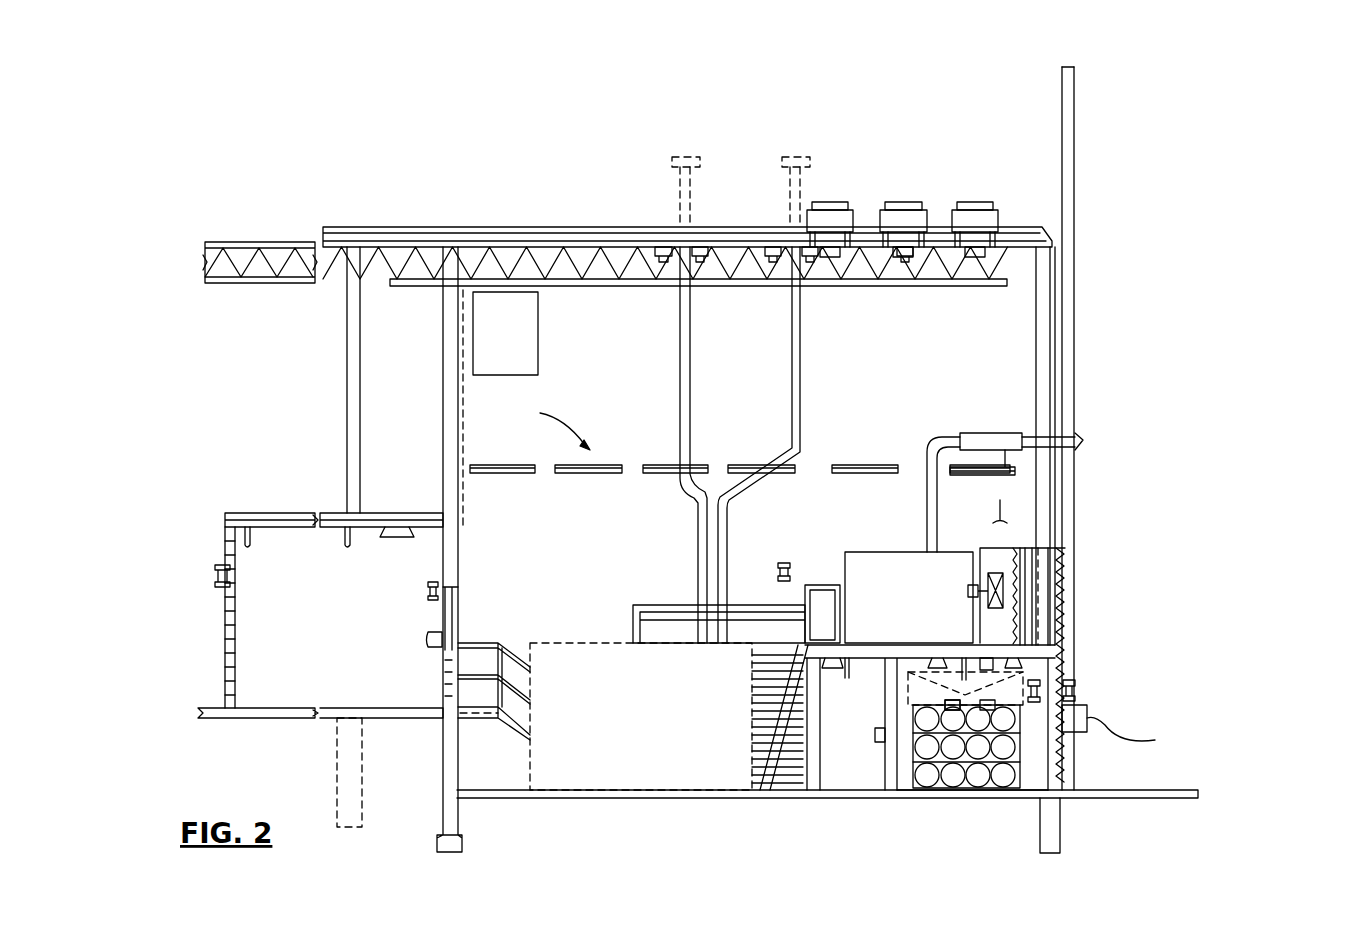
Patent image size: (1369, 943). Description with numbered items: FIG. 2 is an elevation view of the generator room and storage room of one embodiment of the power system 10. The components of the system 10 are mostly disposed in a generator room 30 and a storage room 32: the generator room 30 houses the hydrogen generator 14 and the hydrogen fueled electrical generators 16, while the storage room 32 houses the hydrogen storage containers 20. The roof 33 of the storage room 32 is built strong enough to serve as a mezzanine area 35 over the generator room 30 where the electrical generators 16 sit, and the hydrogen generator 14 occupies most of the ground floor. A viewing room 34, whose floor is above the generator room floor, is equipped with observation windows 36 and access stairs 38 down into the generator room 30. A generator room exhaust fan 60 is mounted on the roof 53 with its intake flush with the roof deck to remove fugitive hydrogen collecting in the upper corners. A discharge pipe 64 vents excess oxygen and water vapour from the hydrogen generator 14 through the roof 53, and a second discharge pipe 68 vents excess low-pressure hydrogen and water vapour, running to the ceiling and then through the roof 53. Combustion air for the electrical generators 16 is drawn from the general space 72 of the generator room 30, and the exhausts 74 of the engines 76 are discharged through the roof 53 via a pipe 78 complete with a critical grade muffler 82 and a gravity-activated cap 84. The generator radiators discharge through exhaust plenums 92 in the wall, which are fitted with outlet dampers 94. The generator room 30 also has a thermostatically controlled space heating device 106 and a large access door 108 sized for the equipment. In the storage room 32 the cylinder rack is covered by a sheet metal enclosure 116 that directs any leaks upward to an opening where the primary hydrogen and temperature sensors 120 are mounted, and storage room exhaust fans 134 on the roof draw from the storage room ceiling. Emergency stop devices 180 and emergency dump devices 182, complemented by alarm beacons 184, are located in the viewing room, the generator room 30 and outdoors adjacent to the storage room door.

The power system 10 is at (1093, 337).
The hydrogen generator 14 is at (602, 795).
The hydrogen fueled electrical generator 16 is at (955, 546).
The hydrogen storage container 20 is at (1005, 795).
The generator room 30 is at (485, 502).
The storage room 32 is at (1040, 778).
The roof of the storage room 33 is at (990, 658).
The viewing room 34 is at (253, 622).
The mezzanine area 35 is at (1010, 639).
The observation window 36 is at (458, 610).
The access stairs 38 is at (490, 714).
The roof 53 is at (540, 245).
The generator room exhaust fan 60 is at (838, 200).
The discharge pipe 64 is at (730, 543).
The second discharge pipe 68 is at (700, 577).
The general space 72 is at (740, 451).
The exhaust 74 is at (662, 265).
The engine 76 is at (1070, 432).
The exhaust pipe 78 is at (1075, 178).
The critical grade muffler 82 is at (990, 413).
The gravity-activated cap 84 is at (1074, 68).
The exhaust plenum 92 is at (1056, 592).
The outlet damper 94 is at (996, 572).
The space heating device 106 is at (497, 330).
The access door 108 is at (762, 787).
The sheet metal enclosure 116 is at (918, 794).
The hydrogen and temperature sensors 120 is at (1117, 650).
The storage room exhaust fan 134 is at (975, 200).
The emergency stop device 180 is at (870, 735).
The emergency dump device 182 is at (426, 640).
The alarm beacon 184 is at (215, 578).